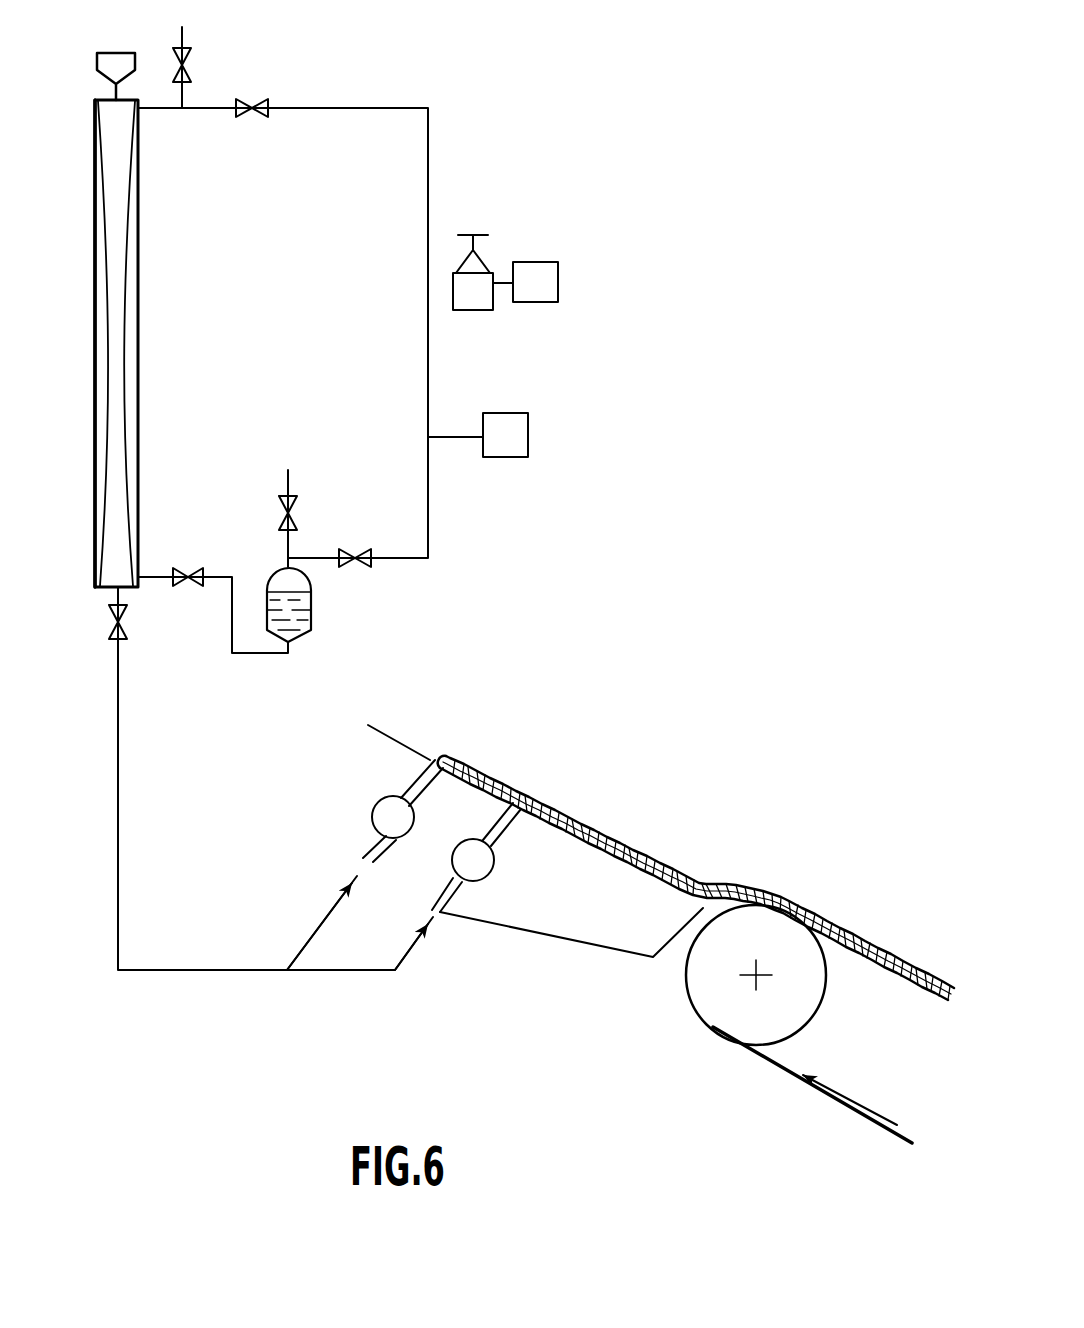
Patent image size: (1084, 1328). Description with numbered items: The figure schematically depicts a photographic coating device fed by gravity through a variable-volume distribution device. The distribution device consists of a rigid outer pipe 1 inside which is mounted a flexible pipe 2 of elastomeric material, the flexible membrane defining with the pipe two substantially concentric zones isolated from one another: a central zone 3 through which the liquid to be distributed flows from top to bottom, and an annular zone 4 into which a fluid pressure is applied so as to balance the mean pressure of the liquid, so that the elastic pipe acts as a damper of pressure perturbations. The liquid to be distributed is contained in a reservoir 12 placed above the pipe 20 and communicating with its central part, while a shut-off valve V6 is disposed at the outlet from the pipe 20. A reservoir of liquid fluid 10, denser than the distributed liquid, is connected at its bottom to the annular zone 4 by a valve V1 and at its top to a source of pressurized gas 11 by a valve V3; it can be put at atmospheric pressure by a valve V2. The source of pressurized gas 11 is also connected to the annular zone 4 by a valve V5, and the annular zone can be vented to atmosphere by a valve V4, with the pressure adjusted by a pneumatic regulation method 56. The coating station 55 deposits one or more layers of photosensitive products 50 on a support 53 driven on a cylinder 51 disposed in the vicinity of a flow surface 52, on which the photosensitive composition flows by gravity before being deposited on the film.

The rigid outer pipe 1 is at (148, 285).
The flexible pipe 2 is at (125, 333).
The central zone 3 is at (115, 233).
The annular zone 4 is at (100, 325).
The reservoir of liquid fluid 10 is at (320, 644).
The source of pressurized gas 11 is at (525, 256).
The reservoir 12 is at (116, 46).
The pipe 20 is at (91, 262).
The layers of photosensitive products 50 is at (597, 832).
The cylinder 51 is at (781, 938).
The flow surface 52 is at (667, 862).
The support 53 is at (808, 1102).
The coating station 55 is at (650, 990).
The pneumatic regulation method 56 is at (513, 412).
The valve V1 is at (188, 557).
The valve V2 is at (270, 515).
The valve V3 is at (355, 538).
The valve V4 is at (198, 69).
The valve V5 is at (253, 89).
The shut-off valve V6 is at (136, 625).